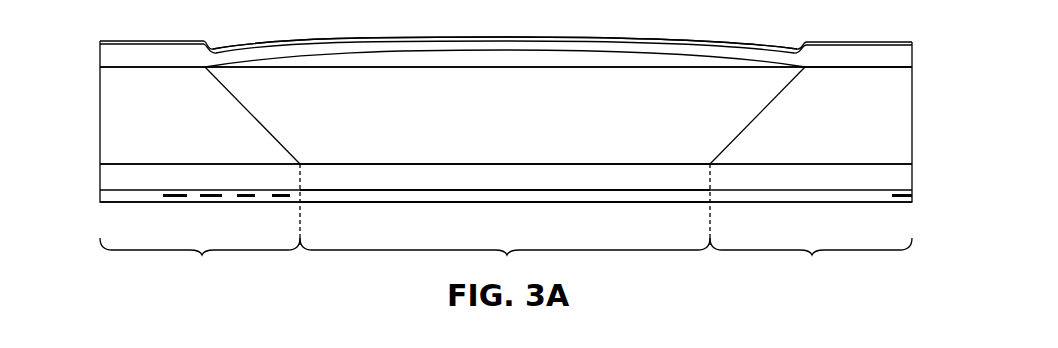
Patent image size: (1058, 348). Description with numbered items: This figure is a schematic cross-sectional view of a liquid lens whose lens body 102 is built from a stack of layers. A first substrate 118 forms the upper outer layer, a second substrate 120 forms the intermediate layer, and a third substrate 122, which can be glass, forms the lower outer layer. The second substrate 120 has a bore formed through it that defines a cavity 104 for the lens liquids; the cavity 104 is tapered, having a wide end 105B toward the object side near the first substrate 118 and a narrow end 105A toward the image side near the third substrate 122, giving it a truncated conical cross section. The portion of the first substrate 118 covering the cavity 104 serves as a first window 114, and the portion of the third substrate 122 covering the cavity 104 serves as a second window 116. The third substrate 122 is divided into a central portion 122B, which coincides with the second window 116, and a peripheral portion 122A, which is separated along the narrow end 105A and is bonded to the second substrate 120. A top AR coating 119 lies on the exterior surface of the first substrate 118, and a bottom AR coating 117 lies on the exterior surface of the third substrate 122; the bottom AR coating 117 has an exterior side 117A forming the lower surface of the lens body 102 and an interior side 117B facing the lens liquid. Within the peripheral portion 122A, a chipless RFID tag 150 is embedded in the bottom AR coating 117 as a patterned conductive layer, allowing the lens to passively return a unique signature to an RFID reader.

The lens body 102 is at (98, 41).
The cavity 104 is at (636, 117).
The narrow end 105A is at (298, 166).
The wide end 105B is at (204, 68).
The first window 114 is at (592, 41).
The second window 116 is at (567, 180).
The bottom AR coating 117 is at (662, 195).
The exterior side 117A is at (392, 203).
The interior side 117B is at (407, 190).
The first substrate 118 is at (897, 59).
The top AR coating 119 is at (119, 44).
The second substrate 120 is at (897, 125).
The third substrate 122 is at (897, 177).
The peripheral portion 122A is at (205, 253).
The central portion 122B is at (505, 253).
The chipless RFID tag 150 is at (204, 203).